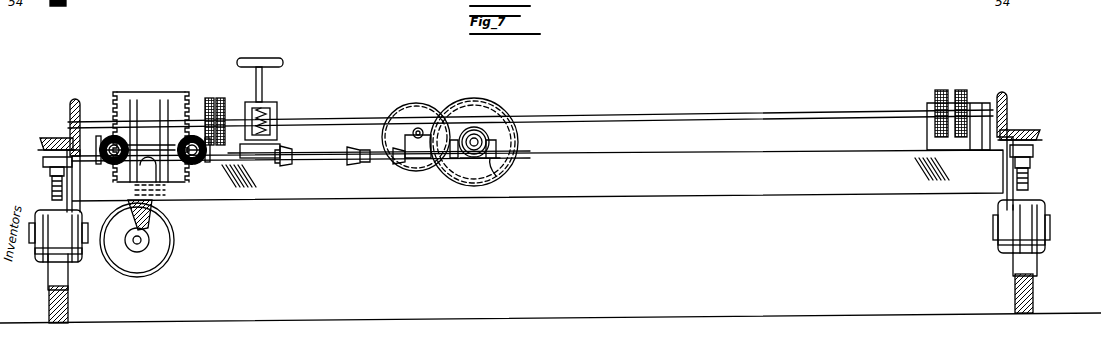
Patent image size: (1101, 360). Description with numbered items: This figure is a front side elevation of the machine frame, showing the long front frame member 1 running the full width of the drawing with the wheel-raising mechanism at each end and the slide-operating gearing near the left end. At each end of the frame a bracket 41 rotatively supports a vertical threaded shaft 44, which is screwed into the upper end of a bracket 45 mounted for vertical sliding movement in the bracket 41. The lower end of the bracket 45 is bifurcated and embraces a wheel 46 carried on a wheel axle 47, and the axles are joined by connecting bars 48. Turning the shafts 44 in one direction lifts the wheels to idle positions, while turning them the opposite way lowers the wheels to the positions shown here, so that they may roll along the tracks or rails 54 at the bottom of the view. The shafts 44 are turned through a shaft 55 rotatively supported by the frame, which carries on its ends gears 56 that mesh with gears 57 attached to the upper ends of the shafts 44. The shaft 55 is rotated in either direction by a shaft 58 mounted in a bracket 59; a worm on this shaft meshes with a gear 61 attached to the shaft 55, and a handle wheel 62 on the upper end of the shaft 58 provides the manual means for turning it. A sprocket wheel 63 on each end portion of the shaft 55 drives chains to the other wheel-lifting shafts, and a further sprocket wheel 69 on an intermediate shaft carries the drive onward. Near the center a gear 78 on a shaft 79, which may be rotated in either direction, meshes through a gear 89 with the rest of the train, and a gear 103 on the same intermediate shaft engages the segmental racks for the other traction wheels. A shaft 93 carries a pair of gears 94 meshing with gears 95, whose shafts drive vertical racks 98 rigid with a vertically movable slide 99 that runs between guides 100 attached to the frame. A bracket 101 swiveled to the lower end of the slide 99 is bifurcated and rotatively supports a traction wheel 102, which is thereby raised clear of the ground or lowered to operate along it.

The front frame member 1 is at (730, 197).
The bracket 41 is at (43, 162).
The vertical threaded shaft 44 is at (52, 190).
The bracket 45 is at (50, 172).
The wheel 46 is at (62, 276).
The wheel axle 47 is at (80, 254).
The connecting bar 48 is at (82, 228).
The track or rail 54 is at (68, 306).
The shaft 55 is at (588, 117).
The gear 56 is at (76, 102).
The gear 57 is at (52, 137).
The shaft 58 is at (262, 82).
The bracket 59 is at (277, 110).
The gear 61 is at (284, 146).
The handle wheel 62 is at (268, 58).
The sprocket wheel 63 is at (224, 108).
The sprocket wheel 69 is at (212, 98).
The gear 78 is at (402, 110).
The shaft 79 is at (420, 128).
The gear 89 is at (488, 102).
The shaft 93 is at (332, 157).
The gear 94 is at (108, 164).
The gear 95 is at (110, 136).
The vertical rack 98 is at (112, 112).
The vertically movable slide 99 is at (140, 92).
The guide 100 is at (150, 120).
The bracket 101 is at (160, 228).
The traction wheel 102 is at (150, 260).
The gear 103 is at (485, 164).